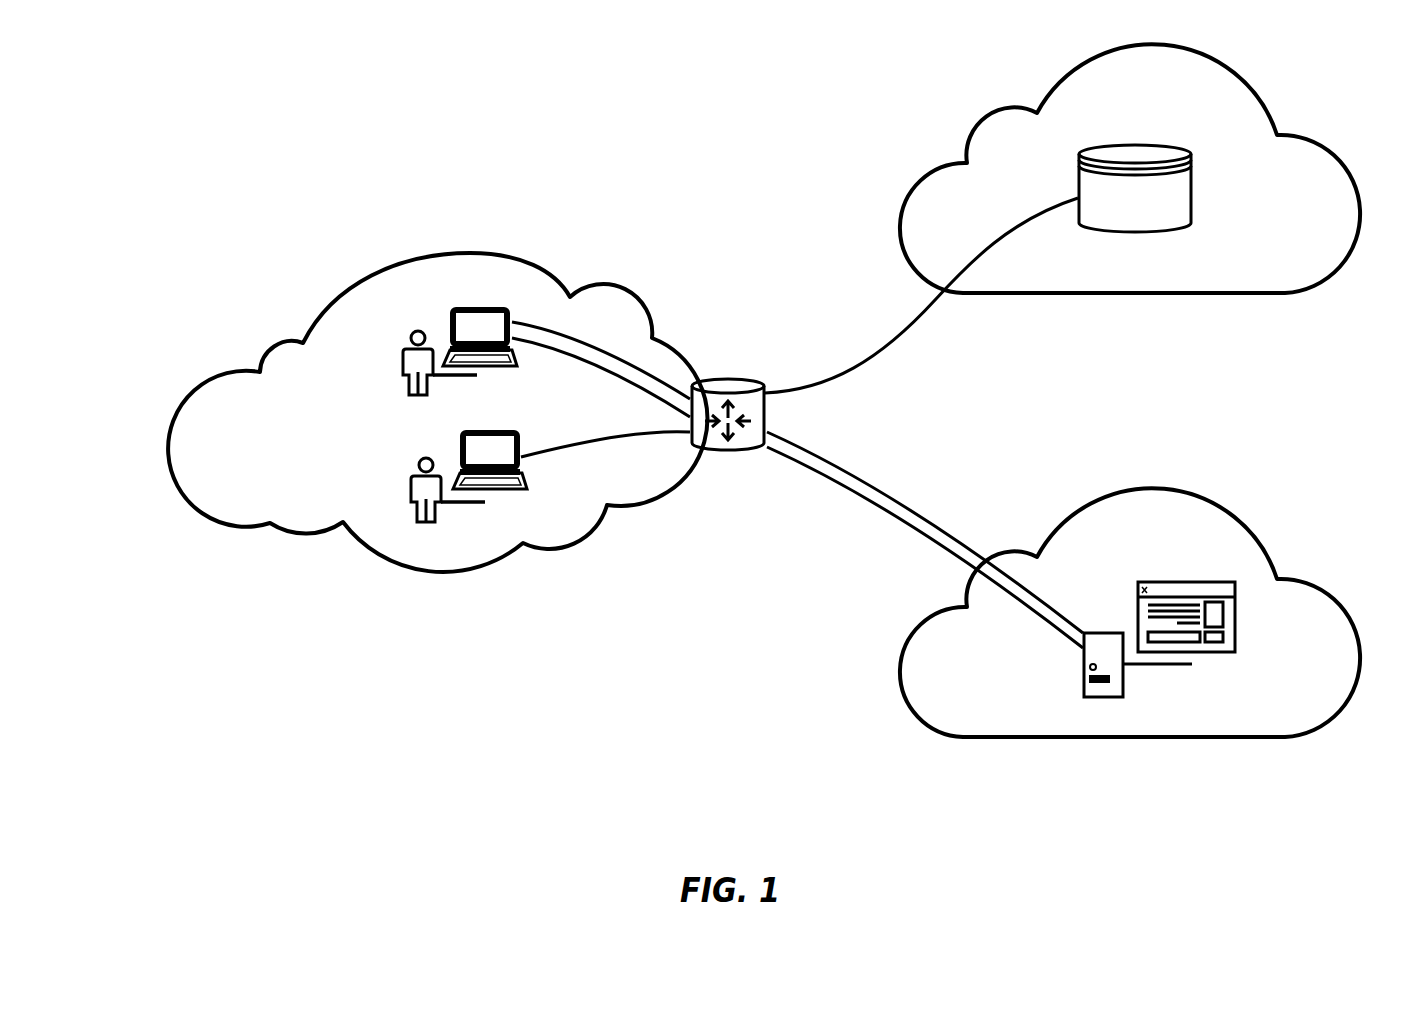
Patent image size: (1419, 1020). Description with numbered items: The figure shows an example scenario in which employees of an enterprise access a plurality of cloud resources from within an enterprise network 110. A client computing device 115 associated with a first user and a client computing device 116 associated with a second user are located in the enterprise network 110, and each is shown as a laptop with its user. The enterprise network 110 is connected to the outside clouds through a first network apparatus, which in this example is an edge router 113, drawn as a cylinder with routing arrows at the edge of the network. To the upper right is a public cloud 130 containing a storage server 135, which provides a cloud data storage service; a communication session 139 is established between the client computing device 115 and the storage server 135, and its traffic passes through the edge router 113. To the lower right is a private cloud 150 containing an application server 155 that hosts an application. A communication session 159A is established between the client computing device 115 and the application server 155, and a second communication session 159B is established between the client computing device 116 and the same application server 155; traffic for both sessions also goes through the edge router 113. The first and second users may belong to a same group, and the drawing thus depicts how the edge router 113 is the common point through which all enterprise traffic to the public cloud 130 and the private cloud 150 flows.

The enterprise network 110 is at (463, 570).
The edge router 113 is at (690, 447).
The client computing device 115 is at (457, 305).
The client computing device 116 is at (465, 440).
The public cloud 130 is at (995, 293).
The storage server 135 is at (1127, 146).
The communication session 139 is at (921, 295).
The private cloud 150 is at (1013, 738).
The application server 155 is at (1125, 685).
The communication session 159A is at (925, 532).
The communication session 159B is at (925, 547).